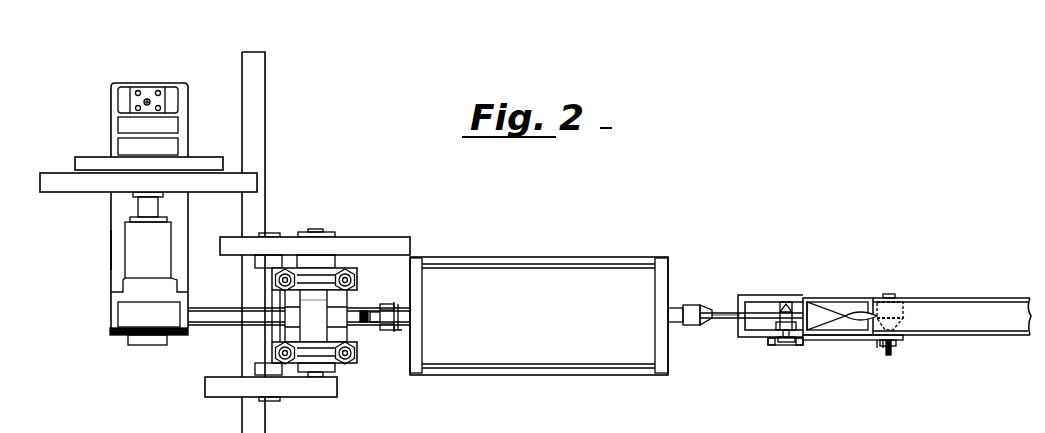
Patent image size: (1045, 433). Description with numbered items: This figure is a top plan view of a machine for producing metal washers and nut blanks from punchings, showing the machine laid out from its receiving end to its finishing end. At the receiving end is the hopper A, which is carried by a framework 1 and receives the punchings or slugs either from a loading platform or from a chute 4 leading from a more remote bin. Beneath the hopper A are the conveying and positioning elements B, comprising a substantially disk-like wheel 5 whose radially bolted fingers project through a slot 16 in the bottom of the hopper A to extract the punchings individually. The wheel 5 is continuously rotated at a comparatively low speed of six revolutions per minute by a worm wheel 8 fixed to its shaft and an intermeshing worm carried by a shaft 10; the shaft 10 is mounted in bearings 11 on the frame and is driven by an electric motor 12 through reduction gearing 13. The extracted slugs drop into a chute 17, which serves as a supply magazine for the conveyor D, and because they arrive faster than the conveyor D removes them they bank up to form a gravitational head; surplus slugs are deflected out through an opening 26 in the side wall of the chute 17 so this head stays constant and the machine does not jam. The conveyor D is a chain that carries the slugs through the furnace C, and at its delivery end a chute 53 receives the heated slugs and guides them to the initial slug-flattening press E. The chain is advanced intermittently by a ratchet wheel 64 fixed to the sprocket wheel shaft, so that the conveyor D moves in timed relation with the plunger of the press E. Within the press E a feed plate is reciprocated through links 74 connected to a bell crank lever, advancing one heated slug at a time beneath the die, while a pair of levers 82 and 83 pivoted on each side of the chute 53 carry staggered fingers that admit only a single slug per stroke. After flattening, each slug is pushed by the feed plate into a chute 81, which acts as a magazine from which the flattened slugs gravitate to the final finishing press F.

The framework 1 is at (88, 245).
The chute 81 is at (215, 318).
The chute 53 is at (313, 312).
The lever 82 is at (330, 308).
The links 74 is at (382, 330).
The lever 83 is at (370, 322).
The ratchet wheel 64 is at (396, 332).
The chute 17 is at (735, 312).
The opening 26 is at (729, 319).
The wheel 5 is at (771, 317).
The worm wheel 8 is at (786, 343).
The shaft 10 is at (857, 341).
The bearings 11 is at (880, 341).
The reduction gearing 13 is at (897, 348).
The slot 16 is at (863, 310).
The electric motor 12 is at (896, 298).
The chute 4 is at (975, 298).
The finishing press F is at (161, 214).
The slug-flattening press E is at (307, 301).
The furnace C is at (539, 316).
The conveyor D is at (684, 323).
The conveying and positioning elements B is at (772, 312).
The hopper A is at (823, 316).